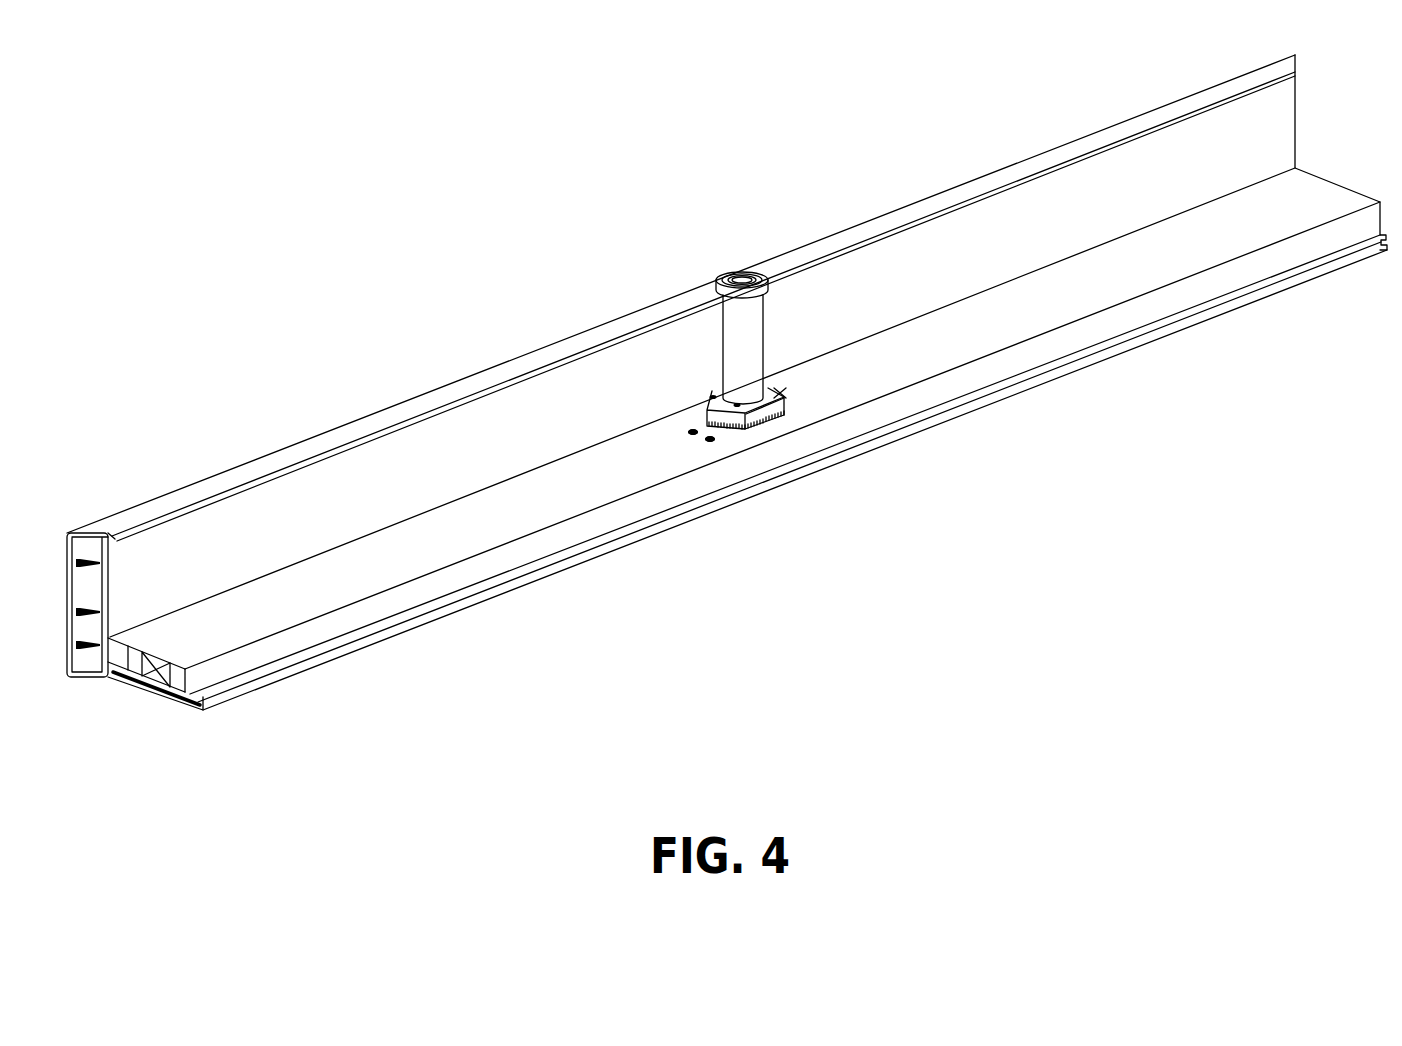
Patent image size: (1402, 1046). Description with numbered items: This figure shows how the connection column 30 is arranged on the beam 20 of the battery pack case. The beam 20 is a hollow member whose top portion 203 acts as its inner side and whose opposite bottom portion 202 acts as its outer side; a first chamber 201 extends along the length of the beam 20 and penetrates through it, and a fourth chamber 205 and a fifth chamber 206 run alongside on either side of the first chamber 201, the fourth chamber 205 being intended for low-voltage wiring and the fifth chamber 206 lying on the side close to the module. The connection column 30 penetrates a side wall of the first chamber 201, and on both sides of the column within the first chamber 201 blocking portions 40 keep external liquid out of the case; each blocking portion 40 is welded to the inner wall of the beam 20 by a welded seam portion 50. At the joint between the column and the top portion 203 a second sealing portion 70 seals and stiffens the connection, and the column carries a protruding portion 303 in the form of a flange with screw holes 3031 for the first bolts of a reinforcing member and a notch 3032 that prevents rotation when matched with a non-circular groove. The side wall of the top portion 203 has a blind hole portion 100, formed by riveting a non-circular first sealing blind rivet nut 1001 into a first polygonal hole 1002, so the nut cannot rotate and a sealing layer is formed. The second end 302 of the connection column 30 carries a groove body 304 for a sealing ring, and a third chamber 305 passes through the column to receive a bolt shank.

The beam 20 is at (1105, 283).
The connection column 30 is at (737, 343).
The second end 302 is at (760, 272).
The protruding portion 303 is at (718, 415).
The groove body 304 is at (727, 272).
The third chamber 305 is at (741, 271).
The screw hole 3031 is at (780, 393).
The notch 3032 is at (767, 412).
The second sealing portion 70 is at (783, 417).
The blind hole portion 100 is at (428, 277).
The first sealing blind rivet nut 1001 is at (690, 431).
The first polygonal hole 1002 is at (707, 438).
The first chamber 201 is at (166, 695).
The bottom portion 202 is at (623, 548).
The top portion 203 is at (497, 530).
The fourth chamber 205 is at (112, 652).
The fifth chamber 206 is at (178, 679).
The blocking portion 40 is at (125, 652).
The welded seam portion 50 is at (150, 690).